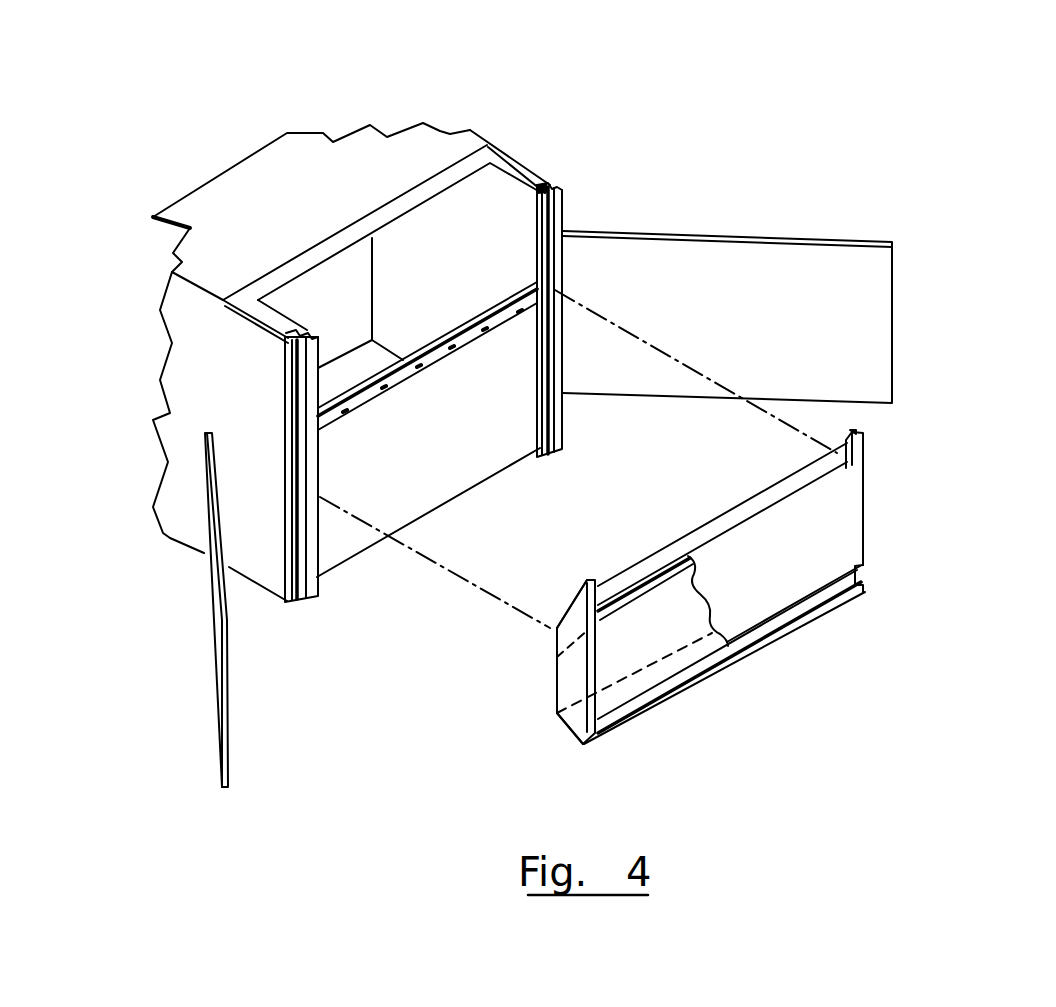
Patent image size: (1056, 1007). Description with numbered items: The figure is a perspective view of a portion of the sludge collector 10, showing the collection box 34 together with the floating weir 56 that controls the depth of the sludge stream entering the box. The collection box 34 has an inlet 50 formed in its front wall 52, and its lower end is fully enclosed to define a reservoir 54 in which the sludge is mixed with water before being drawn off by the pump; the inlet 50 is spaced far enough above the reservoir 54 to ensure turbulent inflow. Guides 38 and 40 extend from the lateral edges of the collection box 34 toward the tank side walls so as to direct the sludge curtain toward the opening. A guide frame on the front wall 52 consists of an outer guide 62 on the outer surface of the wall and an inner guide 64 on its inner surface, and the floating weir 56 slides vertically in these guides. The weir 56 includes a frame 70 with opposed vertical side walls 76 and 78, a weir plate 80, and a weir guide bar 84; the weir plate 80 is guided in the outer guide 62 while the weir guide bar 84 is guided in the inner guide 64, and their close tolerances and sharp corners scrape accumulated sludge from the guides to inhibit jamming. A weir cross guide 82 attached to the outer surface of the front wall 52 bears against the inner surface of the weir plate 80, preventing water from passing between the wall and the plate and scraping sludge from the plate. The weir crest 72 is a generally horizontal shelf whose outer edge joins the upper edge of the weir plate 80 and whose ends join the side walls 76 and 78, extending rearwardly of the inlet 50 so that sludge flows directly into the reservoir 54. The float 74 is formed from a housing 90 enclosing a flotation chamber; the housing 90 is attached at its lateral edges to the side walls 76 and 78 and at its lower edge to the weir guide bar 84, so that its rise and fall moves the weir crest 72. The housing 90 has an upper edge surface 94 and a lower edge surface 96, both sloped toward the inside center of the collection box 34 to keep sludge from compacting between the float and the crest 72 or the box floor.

The sludge collector 10 is at (478, 125).
The collection box 34 is at (498, 148).
The guide 38 is at (230, 757).
The guide 40 is at (853, 240).
The inlet 50 is at (441, 338).
The front wall 52 is at (430, 485).
The reservoir 54 is at (333, 310).
The floating weir 56 is at (873, 477).
The outer guide 62 is at (562, 193).
The inner guide 64 is at (553, 183).
The frame 70 is at (668, 543).
The weir crest 72 is at (768, 502).
The float 74 is at (563, 673).
The side wall 76 is at (582, 578).
The side wall 78 is at (853, 430).
The weir plate 80 is at (832, 550).
The weir cross guide 82 is at (400, 383).
The weir guide bar 84 is at (770, 640).
The housing 90 is at (860, 578).
The upper edge surface 94 is at (578, 633).
The lower edge surface 96 is at (577, 723).